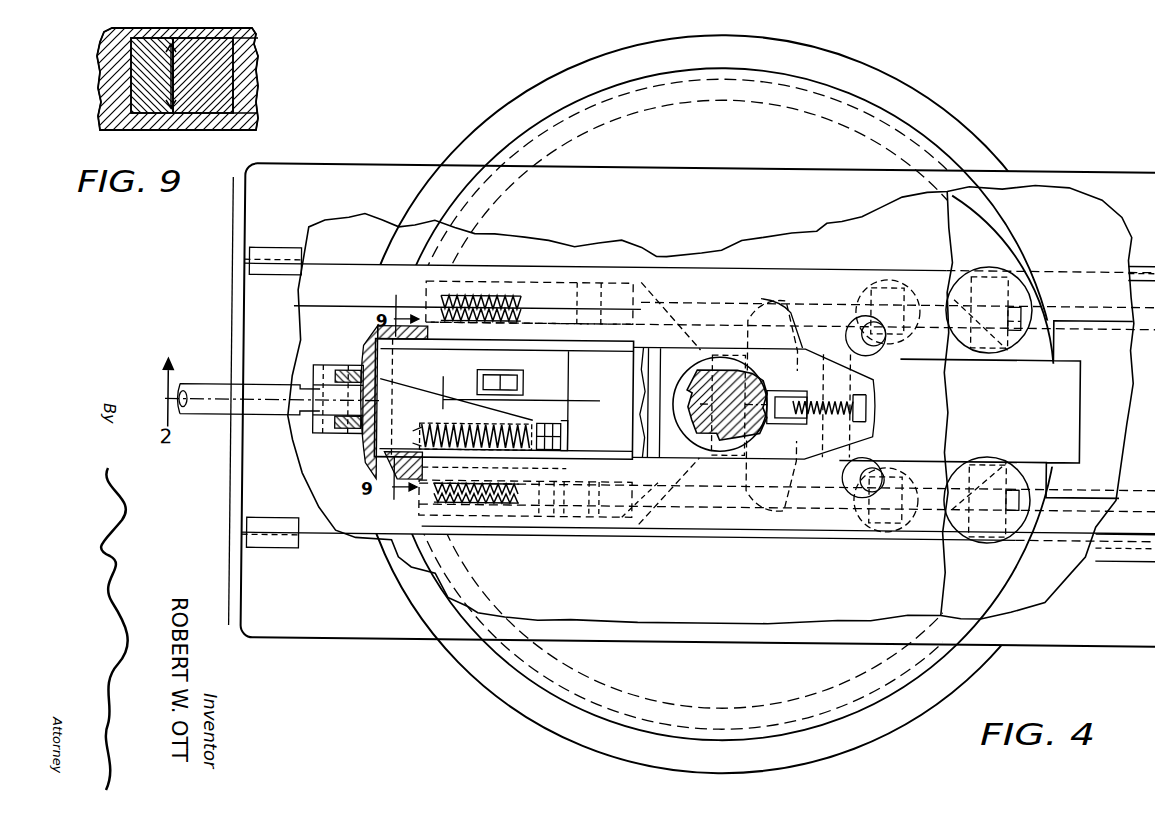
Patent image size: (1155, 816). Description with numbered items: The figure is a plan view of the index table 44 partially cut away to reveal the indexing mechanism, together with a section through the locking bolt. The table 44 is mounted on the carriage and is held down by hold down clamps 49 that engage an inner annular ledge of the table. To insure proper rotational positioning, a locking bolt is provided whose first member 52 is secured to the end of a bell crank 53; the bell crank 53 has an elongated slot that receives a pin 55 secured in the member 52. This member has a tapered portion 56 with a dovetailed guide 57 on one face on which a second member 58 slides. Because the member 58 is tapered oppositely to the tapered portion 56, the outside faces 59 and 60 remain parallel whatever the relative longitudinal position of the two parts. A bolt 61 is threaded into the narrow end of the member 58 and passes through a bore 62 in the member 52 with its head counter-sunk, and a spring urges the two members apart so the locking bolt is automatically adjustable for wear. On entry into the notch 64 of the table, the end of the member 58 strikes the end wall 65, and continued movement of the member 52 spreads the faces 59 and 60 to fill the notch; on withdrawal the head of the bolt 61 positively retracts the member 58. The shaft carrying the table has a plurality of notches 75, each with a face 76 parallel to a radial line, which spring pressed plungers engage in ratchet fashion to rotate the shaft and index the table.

In FIG. 4, the table 44 is at (385, 633).
In FIG. 4, the hold down clamps 49 is at (1015, 280).
In FIG. 4, the locking bolt member 52 is at (533, 352).
In FIG. 4, the bell crank 53 is at (497, 369).
In FIG. 4, the pin 55 is at (500, 395).
In FIG. 9, the tapered portion 56 is at (157, 40).
In FIG. 9, the dovetailed guide 57 is at (173, 114).
In FIG. 9, the second member 58 is at (205, 44).
In FIG. 4, the second member 58 is at (400, 455).
In FIG. 9, the outside face 59 is at (131, 68).
In FIG. 9, the outside face 60 is at (244, 66).
In FIG. 4, the bolt 61 is at (558, 418).
In FIG. 4, the bore 62 is at (574, 436).
In FIG. 4, the notch 64 is at (380, 336).
In FIG. 4, the end wall 65 is at (363, 441).
In FIG. 4, the notches 75 is at (713, 362).
In FIG. 4, the face 76 is at (780, 352).